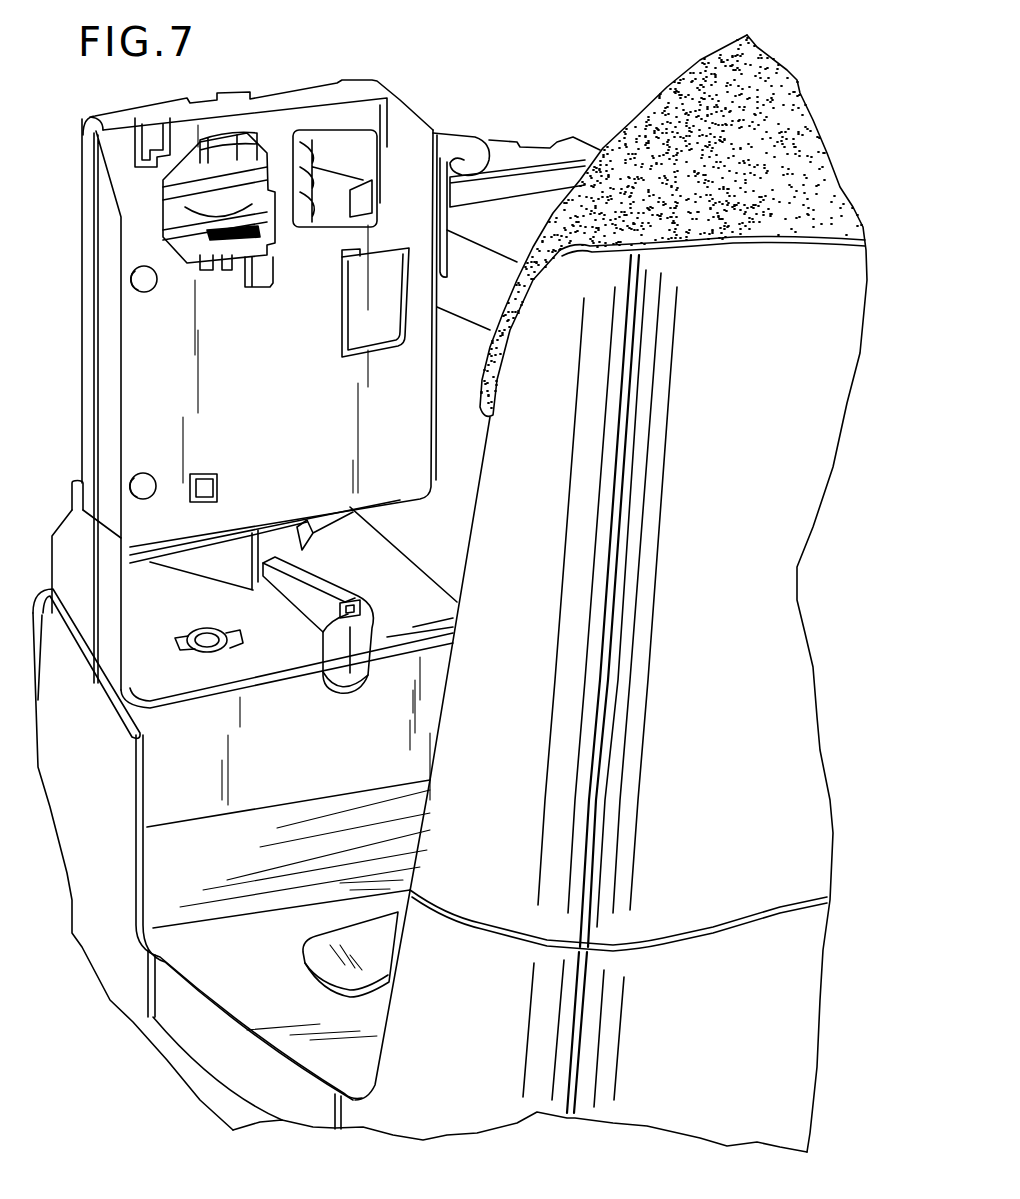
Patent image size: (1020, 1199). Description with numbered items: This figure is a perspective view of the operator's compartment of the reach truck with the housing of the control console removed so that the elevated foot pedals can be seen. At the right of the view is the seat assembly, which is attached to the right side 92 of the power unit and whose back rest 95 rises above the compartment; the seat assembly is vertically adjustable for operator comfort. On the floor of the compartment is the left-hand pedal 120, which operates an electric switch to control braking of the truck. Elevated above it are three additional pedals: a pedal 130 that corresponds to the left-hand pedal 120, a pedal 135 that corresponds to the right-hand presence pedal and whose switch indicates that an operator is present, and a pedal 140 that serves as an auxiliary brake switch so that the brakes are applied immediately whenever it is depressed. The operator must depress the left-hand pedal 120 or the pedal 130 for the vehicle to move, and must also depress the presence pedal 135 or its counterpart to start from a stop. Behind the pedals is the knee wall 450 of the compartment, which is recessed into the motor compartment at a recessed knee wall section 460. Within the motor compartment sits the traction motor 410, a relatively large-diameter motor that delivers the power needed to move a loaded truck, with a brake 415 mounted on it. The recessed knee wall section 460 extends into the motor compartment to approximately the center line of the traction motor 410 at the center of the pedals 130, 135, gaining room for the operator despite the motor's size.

The right side 92 is at (763, 557).
The back rest 95 is at (797, 130).
The left-hand pedal 120 is at (377, 950).
The pedal 130 is at (165, 660).
The pedal 135 is at (417, 628).
The pedal 140 is at (322, 592).
The traction motor 410 is at (265, 282).
The brake 415 is at (180, 191).
The knee wall 450 is at (340, 448).
The recessed knee wall section 460 is at (205, 563).